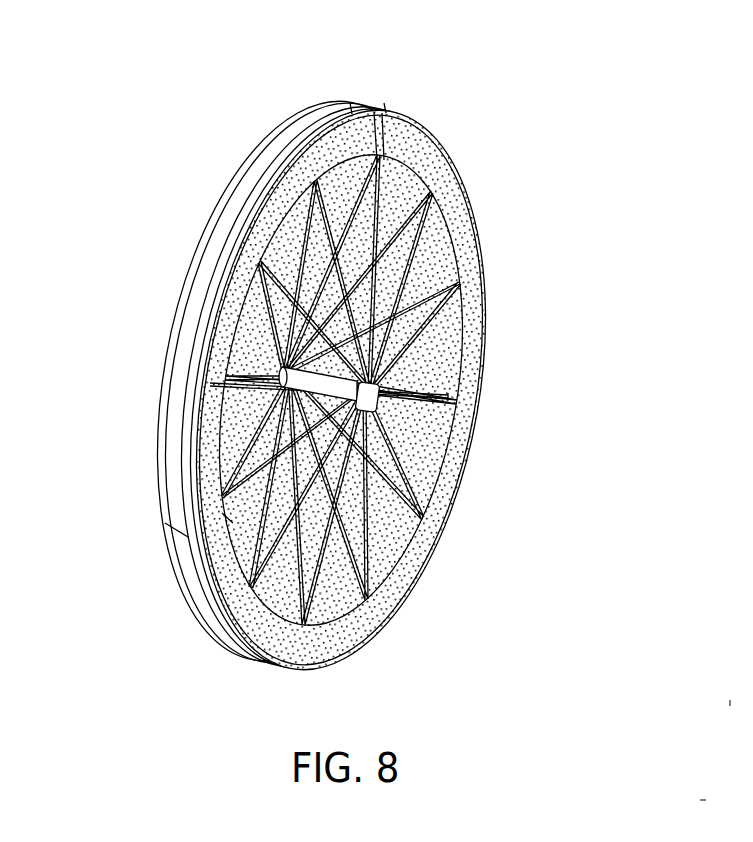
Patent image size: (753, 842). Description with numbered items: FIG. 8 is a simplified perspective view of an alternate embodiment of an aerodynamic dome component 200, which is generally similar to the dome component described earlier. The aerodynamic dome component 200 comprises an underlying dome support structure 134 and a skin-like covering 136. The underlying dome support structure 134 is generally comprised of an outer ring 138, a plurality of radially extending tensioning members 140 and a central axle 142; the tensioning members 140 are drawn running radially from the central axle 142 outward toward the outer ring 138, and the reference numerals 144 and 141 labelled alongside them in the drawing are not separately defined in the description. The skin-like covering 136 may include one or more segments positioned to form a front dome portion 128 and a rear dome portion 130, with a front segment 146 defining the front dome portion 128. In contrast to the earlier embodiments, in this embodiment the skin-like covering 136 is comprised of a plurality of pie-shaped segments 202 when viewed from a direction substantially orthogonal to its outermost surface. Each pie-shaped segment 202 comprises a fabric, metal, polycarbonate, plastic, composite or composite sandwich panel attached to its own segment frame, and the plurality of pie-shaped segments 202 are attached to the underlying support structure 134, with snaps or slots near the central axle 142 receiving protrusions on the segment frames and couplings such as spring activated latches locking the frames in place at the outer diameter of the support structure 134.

The aerodynamic dome component 200 is at (580, 60).
The rear dome portion 130 is at (180, 289).
The underlying dome support structure 134 is at (248, 210).
The outer ring 138 is at (527, 158).
The rim flange 144 is at (205, 615).
The skin-like covering 136 is at (487, 273).
The front segment 146 is at (376, 390).
The front dome portion 128 is at (445, 338).
The radially extending tensioning members 140 is at (313, 550).
The inner ring edge 141 is at (291, 710).
The central axle 142 is at (383, 390).
The pie-shaped segments 202 is at (420, 108).